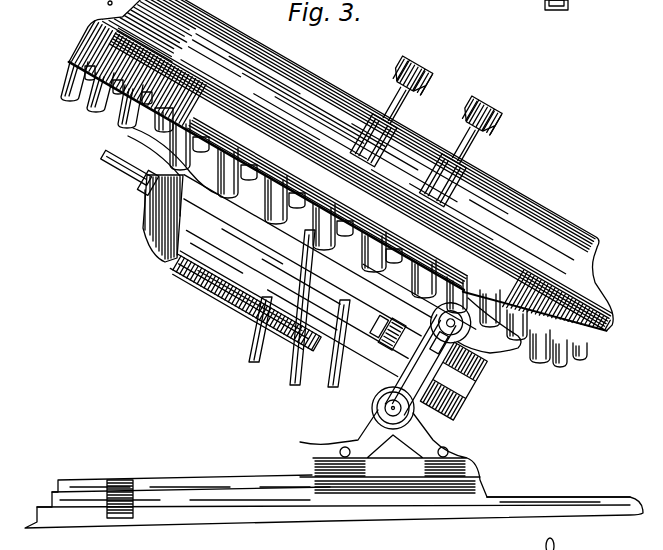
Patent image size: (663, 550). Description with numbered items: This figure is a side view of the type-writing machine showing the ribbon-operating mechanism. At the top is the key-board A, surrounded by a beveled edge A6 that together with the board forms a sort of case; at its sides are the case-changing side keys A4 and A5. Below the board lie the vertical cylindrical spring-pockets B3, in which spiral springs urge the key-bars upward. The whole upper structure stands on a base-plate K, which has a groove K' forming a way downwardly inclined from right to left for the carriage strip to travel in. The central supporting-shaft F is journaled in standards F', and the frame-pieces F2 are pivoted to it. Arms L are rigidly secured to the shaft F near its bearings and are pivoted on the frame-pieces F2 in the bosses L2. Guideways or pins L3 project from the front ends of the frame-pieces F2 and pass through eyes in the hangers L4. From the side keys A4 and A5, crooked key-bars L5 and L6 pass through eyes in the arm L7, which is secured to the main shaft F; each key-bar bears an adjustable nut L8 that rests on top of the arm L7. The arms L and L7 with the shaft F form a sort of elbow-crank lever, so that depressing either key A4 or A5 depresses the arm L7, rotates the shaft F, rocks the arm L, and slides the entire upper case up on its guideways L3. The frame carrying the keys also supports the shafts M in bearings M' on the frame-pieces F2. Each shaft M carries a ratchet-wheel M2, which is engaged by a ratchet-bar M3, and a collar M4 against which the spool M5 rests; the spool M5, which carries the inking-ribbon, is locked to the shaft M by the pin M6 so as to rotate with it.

The key-board A is at (513, 193).
The side key A4 is at (394, 76).
The side key A5 is at (465, 117).
The beveled edge A6 is at (268, 101).
The spring-pocket B3 is at (133, 128).
The shaft M is at (271, 284).
The bearing M' is at (416, 348).
The ratchet-wheel M2 is at (400, 341).
The ratchet-bar M3 is at (377, 337).
The collar M4 is at (262, 320).
The spool M5 is at (178, 262).
The pin M6 is at (262, 308).
The central supporting-shaft F is at (443, 410).
The standard F' is at (380, 453).
The frame-piece F2 is at (258, 277).
The arm L is at (430, 358).
The boss L2 is at (503, 343).
The guideway or pin L3 is at (128, 168).
The hanger L4 is at (156, 177).
The crooked key-bar L5 is at (253, 357).
The crooked key-bar L6 is at (297, 381).
The arm L7 is at (335, 372).
The nut L8 is at (296, 312).
The base-plate K is at (334, 512).
The groove K' is at (121, 486).